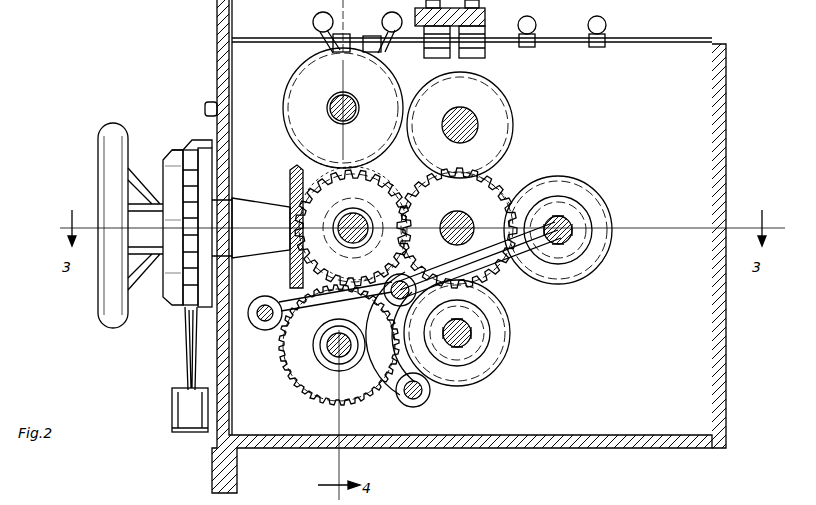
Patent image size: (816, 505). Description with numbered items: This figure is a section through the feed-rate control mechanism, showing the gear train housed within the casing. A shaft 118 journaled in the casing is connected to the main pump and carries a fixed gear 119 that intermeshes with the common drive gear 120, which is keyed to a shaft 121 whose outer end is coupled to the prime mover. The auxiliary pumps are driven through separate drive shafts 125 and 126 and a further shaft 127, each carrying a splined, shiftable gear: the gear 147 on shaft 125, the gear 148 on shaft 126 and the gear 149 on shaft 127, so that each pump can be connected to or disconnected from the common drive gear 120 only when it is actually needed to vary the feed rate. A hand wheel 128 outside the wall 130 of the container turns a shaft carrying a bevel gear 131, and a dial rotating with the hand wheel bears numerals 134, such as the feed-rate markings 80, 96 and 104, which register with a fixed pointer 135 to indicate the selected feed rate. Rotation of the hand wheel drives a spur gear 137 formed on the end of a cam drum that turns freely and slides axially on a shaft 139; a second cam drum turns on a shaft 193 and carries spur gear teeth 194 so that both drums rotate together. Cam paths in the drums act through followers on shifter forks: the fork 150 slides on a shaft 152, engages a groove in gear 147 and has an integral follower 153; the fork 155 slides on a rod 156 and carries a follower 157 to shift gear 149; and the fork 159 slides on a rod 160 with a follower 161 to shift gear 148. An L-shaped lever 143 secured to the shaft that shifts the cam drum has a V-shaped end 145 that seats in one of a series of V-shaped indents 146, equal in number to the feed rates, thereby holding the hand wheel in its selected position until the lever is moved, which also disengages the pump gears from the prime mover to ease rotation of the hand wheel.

The indicia 80 is at (174, 282).
The indicia 96 is at (174, 229).
The indicia 104 is at (174, 175).
The shaft 118 is at (466, 118).
The fixed gear 119 is at (507, 118).
The common drive gear 120 is at (490, 188).
The shaft 121 is at (498, 195).
The drive shaft 125 is at (572, 220).
The drive shaft 126 is at (370, 210).
The shaft 127 is at (475, 345).
The hand wheel 128 is at (108, 304).
The wall 130 is at (218, 452).
The bevel gear 131 is at (292, 183).
The numerals 134 is at (172, 308).
The fixed pointer 135 is at (185, 140).
The spur gear 137 is at (300, 390).
The shaft 139 is at (330, 352).
The L-shaped lever 143 is at (187, 366).
The end 145 is at (190, 330).
The V-shaped indents 146 is at (170, 152).
The shiftable gear 147 is at (603, 202).
The shiftable gear 148 is at (318, 170).
The shiftable gear 149 is at (500, 322).
The shifter fork 150 is at (520, 275).
The shaft 152 is at (442, 323).
The follower 153 is at (382, 258).
The fork 155 is at (437, 392).
The rod 156 is at (418, 405).
The follower 157 is at (403, 398).
The fork 159 is at (280, 300).
The rod 160 is at (262, 328).
The follower 161 is at (283, 343).
The shaft 193 is at (327, 105).
The spur gear teeth 194 is at (335, 157).